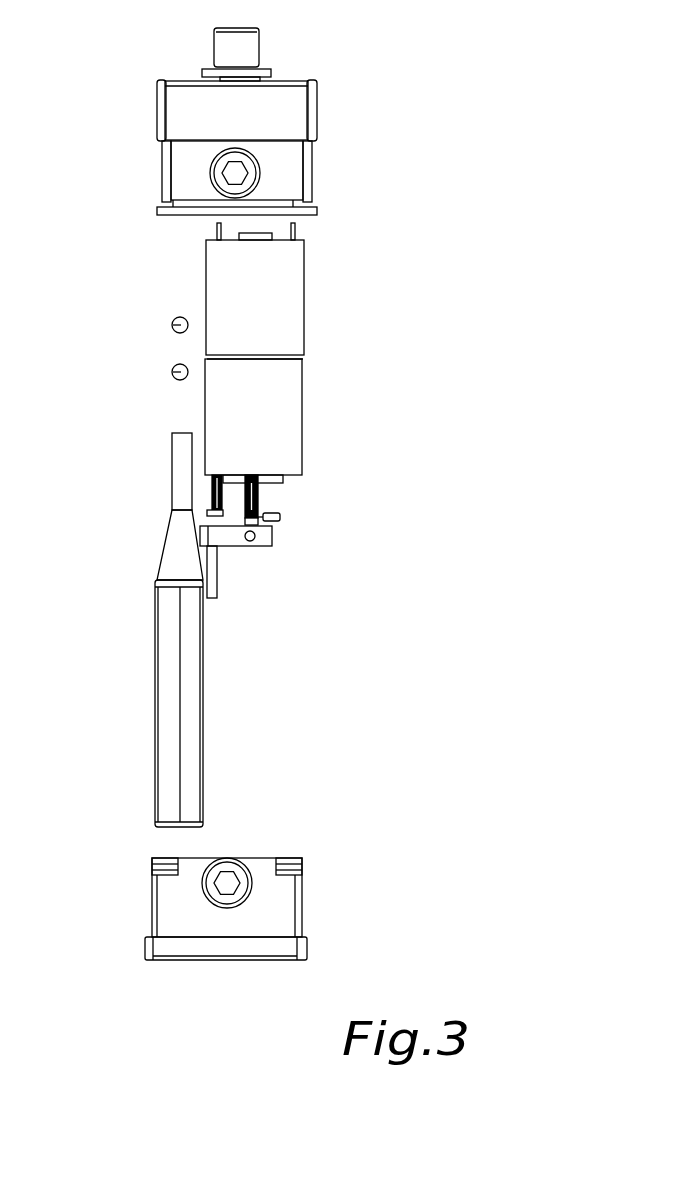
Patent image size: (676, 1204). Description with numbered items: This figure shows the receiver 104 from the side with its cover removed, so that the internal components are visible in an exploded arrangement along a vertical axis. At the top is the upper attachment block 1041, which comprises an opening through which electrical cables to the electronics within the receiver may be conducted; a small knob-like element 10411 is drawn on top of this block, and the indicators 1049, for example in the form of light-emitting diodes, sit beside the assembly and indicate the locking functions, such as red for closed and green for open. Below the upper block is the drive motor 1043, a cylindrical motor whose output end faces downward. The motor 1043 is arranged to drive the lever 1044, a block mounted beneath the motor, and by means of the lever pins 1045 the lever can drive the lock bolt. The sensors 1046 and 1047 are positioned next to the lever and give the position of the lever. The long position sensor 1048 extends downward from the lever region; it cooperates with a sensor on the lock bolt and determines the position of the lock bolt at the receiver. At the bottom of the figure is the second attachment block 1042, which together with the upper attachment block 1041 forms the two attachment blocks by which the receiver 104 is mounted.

The receiver 104 is at (421, 80).
The upper attachment block 1041 is at (187, 169).
The adjusting knob 10411 is at (243, 47).
The attachment block 1042 is at (277, 910).
The drive motor 1043 is at (280, 389).
The lever 1044 is at (260, 540).
The lever pins 1045 is at (212, 575).
The sensor 1046 is at (263, 511).
The sensor 1047 is at (210, 512).
The position sensor 1048 is at (190, 693).
The indicators 1049 is at (172, 323).